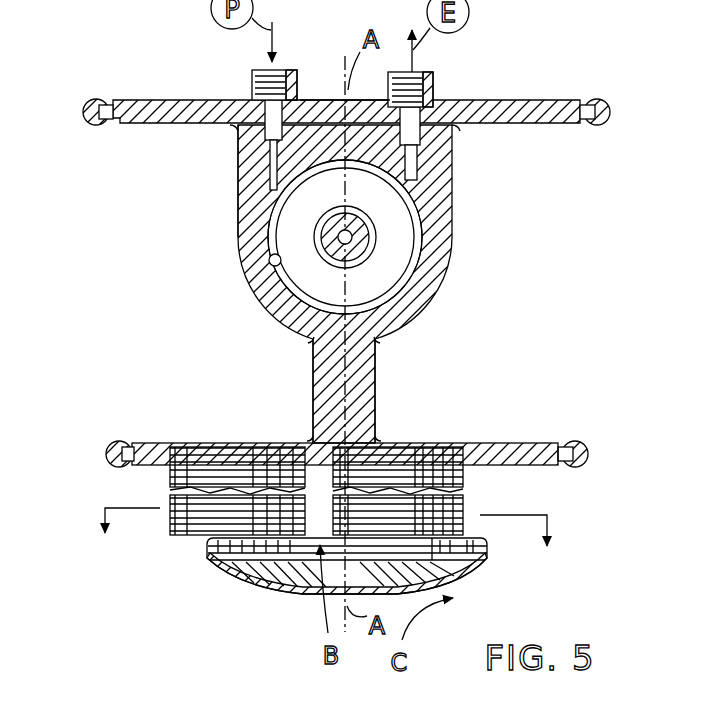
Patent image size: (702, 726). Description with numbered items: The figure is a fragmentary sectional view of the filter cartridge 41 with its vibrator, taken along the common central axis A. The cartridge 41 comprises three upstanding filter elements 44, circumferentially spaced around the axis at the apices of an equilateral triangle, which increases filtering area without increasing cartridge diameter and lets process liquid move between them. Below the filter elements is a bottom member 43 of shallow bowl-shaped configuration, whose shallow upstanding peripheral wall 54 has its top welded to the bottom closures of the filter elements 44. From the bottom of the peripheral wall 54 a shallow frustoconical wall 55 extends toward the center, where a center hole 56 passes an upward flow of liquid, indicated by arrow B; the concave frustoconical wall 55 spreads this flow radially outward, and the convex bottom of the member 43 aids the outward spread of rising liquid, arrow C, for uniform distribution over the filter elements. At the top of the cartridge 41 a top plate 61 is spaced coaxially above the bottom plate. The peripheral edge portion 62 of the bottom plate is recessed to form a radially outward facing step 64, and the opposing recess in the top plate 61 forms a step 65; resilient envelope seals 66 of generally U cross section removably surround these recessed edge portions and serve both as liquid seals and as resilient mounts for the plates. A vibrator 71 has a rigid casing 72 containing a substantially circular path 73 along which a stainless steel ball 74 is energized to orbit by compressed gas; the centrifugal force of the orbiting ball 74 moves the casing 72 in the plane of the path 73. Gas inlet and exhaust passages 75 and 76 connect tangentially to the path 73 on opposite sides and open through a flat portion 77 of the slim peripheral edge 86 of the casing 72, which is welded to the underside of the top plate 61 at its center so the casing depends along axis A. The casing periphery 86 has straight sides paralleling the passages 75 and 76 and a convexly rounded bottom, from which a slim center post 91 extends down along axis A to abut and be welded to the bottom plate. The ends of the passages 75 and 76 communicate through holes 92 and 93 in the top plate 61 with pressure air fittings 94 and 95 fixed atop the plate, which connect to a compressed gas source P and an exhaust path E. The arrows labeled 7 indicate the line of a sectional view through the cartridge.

The section line 7- 7 is at (326, 548).
The filter cartridge 41 is at (270, 496).
The bottom member 43 is at (227, 568).
The filter element 44 is at (170, 512).
The peripheral wall 54 is at (487, 548).
The frustoconical wall 55 is at (250, 580).
The center hole 56 is at (313, 598).
The top plate 61 is at (512, 110).
The peripheral edge portion 62 is at (570, 447).
The step 64 is at (130, 443).
The step 65 is at (116, 114).
The envelope seal 66 is at (603, 100).
The vibrator 71 is at (453, 198).
The casing 72 is at (451, 243).
The circular path 73 is at (412, 266).
The ball 74 is at (268, 259).
The inlet passage 75 is at (273, 160).
The exhaust passage 76 is at (412, 163).
The portion of casing periphery 77 is at (328, 100).
The peripheral edge 86 is at (236, 215).
The center post 91 is at (330, 379).
The hole 92 is at (252, 92).
The hole 93 is at (434, 89).
The pressure air fitting 94 is at (253, 83).
The pressure air fitting 95 is at (418, 98).